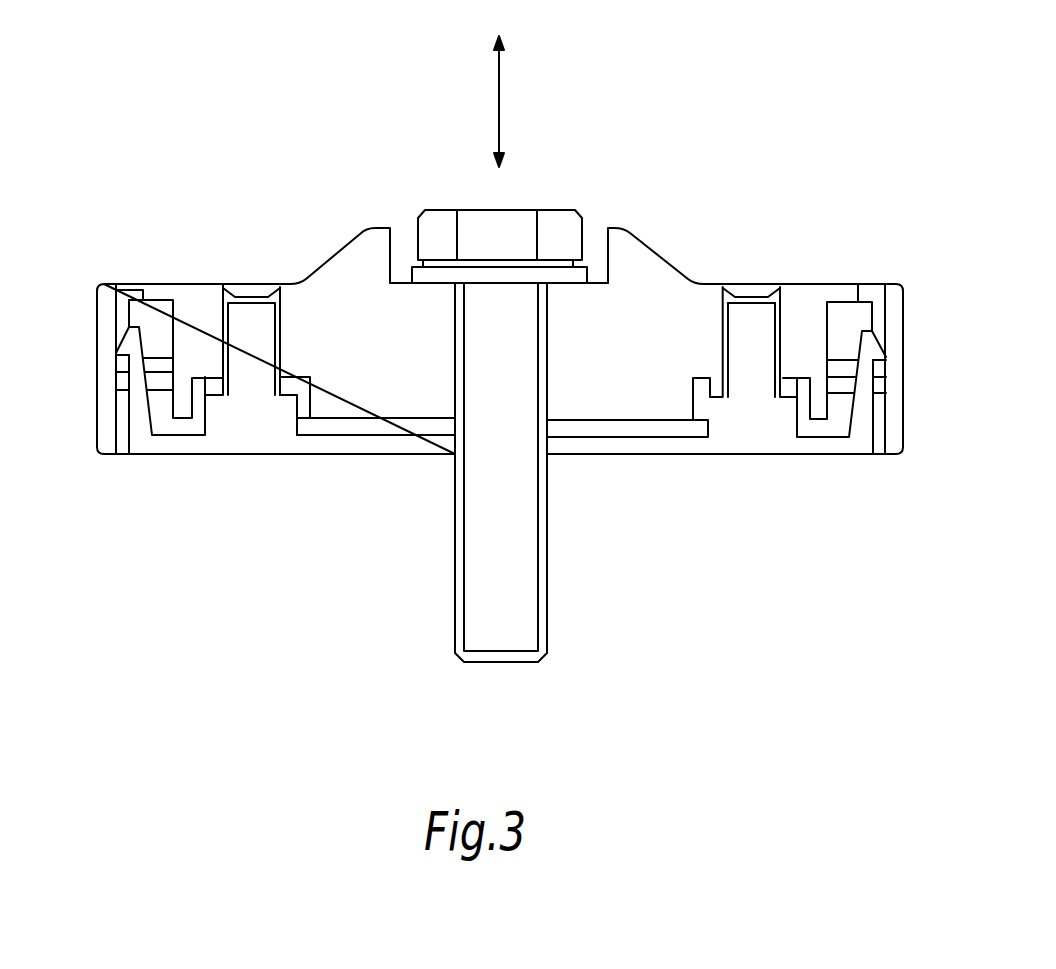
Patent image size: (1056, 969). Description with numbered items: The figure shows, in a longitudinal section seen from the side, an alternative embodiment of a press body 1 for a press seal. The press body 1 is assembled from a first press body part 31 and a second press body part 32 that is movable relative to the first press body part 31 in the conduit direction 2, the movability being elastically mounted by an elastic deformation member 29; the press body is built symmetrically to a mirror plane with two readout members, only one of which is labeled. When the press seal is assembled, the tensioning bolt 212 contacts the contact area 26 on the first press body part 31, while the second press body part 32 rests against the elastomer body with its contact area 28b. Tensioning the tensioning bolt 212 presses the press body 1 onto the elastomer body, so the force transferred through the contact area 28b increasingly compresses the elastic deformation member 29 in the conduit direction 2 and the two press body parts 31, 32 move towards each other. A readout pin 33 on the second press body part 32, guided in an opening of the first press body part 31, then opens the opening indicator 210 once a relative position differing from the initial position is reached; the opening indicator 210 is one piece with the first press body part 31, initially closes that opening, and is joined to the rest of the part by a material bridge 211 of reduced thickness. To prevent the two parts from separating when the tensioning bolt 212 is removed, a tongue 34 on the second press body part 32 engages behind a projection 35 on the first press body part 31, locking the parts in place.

The press body 1 is at (296, 199).
The conduit direction 2 is at (501, 100).
The contact area 26 is at (583, 216).
The tensioning bolt 212 is at (485, 413).
The first press body part 31 is at (633, 313).
The opening indicator 210 is at (748, 288).
The material bridge 211 is at (782, 287).
The readout pin 33 is at (752, 344).
The tongue 34 is at (865, 378).
The projection 35 is at (880, 365).
The elastic deformation member 29 is at (780, 397).
The second press body part 32 is at (620, 448).
The contact area 28b is at (595, 455).